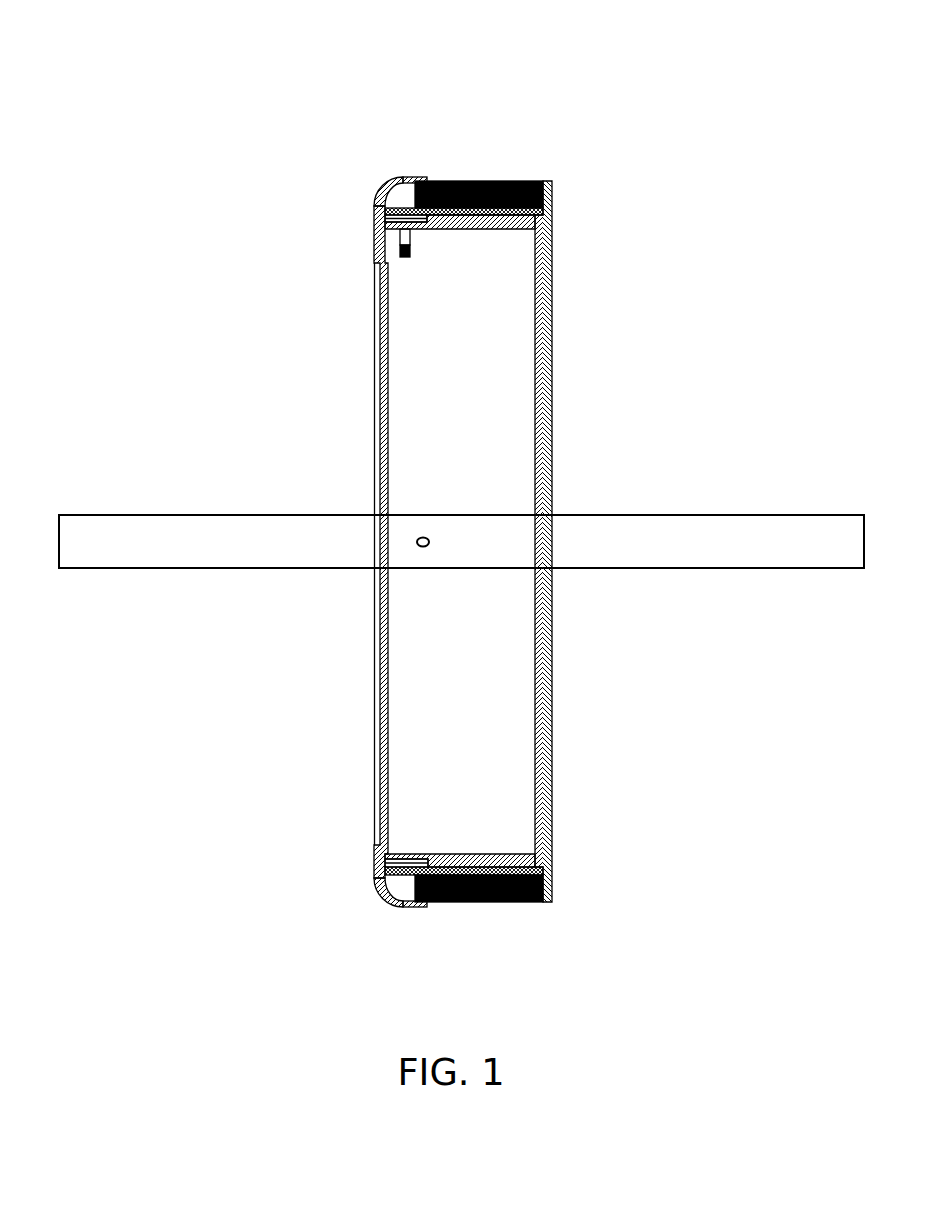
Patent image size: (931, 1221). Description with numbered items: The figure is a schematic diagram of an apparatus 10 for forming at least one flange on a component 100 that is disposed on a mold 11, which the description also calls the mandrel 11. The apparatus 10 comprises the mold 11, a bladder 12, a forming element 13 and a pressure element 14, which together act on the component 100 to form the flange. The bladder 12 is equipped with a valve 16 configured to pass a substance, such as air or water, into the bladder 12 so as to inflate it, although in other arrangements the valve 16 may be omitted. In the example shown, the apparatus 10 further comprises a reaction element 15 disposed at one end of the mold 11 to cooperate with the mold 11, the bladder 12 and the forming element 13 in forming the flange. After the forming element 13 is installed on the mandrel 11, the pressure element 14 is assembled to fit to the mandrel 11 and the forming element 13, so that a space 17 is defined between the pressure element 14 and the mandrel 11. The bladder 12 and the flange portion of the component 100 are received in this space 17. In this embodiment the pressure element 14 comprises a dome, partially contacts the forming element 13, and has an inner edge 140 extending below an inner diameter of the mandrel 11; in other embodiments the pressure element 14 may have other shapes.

The apparatus 10 is at (461, 479).
The mold 11 is at (488, 853).
The bladder 12 is at (383, 862).
The forming element 13 is at (505, 181).
The pressure element 14 is at (373, 228).
The reaction element 15 is at (552, 292).
The valve 16 is at (406, 258).
The space 17 is at (410, 186).
The component 100 is at (387, 208).
The inner edge 140 is at (378, 263).